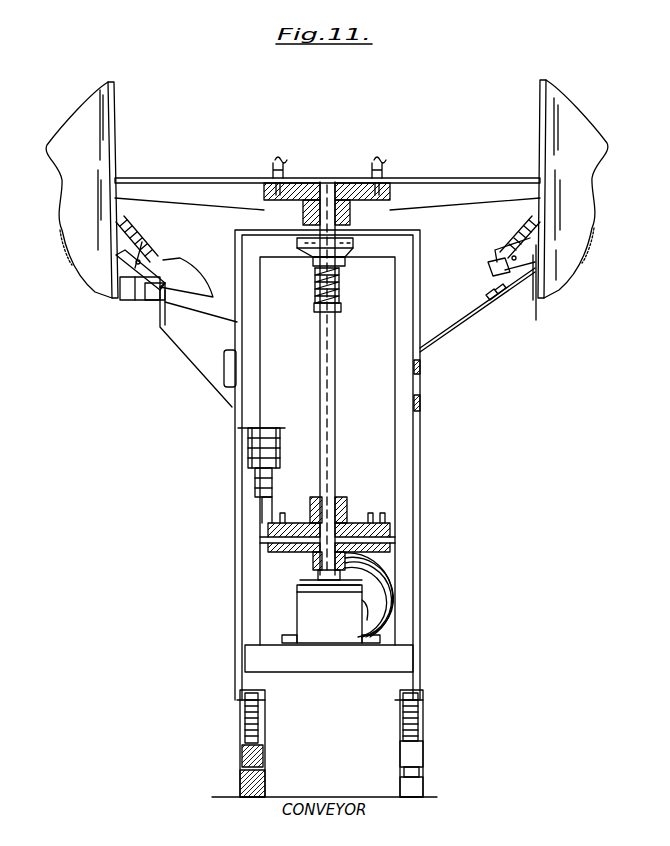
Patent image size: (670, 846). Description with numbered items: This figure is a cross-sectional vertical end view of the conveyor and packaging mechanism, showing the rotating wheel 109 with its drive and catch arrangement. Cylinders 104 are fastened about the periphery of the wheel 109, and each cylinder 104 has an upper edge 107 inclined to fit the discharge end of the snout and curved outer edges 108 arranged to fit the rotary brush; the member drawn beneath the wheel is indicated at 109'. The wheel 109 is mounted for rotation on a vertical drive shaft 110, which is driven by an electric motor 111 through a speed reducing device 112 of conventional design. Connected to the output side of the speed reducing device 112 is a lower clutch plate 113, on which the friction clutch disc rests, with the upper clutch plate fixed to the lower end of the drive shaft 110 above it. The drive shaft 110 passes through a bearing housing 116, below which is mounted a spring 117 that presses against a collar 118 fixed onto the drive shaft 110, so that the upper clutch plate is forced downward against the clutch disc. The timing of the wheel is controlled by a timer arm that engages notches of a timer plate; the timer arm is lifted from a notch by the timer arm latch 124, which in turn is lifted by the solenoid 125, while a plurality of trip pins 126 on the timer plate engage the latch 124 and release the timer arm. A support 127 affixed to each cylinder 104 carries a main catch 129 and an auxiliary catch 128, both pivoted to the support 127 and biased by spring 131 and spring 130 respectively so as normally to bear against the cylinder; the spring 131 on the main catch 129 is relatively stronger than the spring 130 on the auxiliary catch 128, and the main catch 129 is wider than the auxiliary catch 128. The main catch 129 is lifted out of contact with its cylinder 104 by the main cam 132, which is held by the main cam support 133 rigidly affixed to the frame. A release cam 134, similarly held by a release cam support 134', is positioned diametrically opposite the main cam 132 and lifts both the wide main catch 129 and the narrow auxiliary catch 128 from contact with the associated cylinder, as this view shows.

The cylinder 104 is at (103, 157).
The upper edge 107 is at (74, 118).
The curved outer edges 108 is at (62, 180).
The wheel 109 is at (327, 191).
The lower plate 109' is at (327, 209).
The vertical drive shaft 110 is at (335, 441).
The electric motor 111 is at (305, 580).
The speed reducing device 112 is at (305, 606).
The lower clutch plate 113 is at (300, 552).
The bearing housing 116 is at (343, 260).
The spring 117 is at (340, 292).
The collar 118 is at (338, 312).
The timer arm latch 124 is at (272, 508).
The solenoid 125 is at (280, 452).
The trip pins 126 is at (367, 512).
The support 127 is at (138, 245).
The auxiliary catch 128 is at (152, 262).
The main catch 129 is at (175, 266).
The spring 130 is at (142, 242).
The spring 131 is at (138, 283).
The main cam 132 is at (120, 300).
The main cam support 133 is at (180, 337).
The release cam 134 is at (548, 285).
The release cam support 134' is at (477, 310).